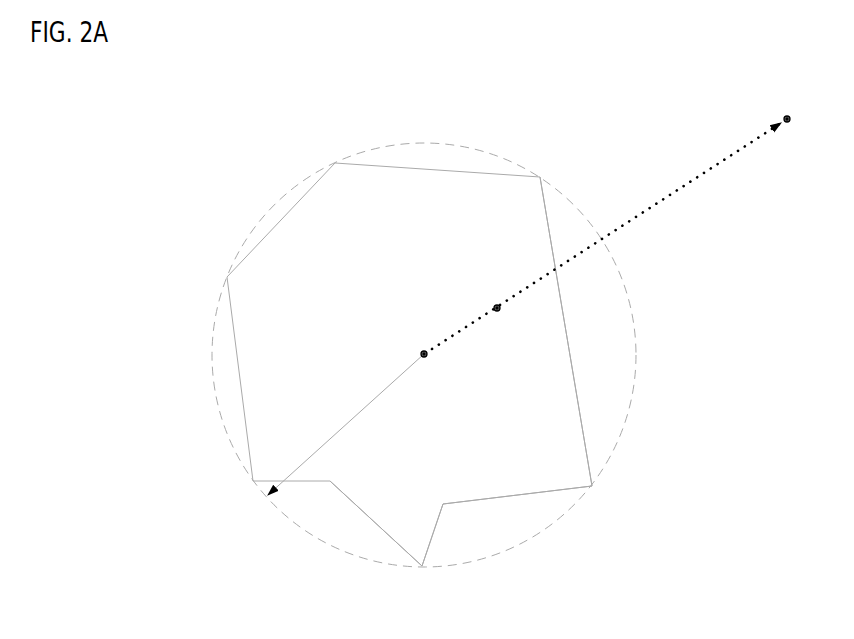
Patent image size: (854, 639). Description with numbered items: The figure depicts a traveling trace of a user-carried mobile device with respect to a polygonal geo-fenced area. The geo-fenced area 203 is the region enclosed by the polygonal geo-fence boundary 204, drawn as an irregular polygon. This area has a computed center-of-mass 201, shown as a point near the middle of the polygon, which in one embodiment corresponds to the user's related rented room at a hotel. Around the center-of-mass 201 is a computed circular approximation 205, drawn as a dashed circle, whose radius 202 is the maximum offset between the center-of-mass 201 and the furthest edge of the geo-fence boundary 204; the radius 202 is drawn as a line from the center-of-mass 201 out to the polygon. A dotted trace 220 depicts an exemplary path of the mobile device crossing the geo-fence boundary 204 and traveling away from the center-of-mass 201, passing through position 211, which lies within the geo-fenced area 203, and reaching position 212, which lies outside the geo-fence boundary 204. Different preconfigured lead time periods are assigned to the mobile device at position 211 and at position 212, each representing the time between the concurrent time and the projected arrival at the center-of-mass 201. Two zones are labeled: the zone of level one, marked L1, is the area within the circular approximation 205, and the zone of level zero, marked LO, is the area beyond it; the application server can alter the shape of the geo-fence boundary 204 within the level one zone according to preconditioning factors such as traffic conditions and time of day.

The center-of-mass 201 is at (403, 337).
The radius 202 is at (346, 424).
The geo-fenced area 203 is at (517, 340).
The polygonal geo-fence boundary 204 is at (397, 168).
The circular approximation 205 is at (635, 389).
The position 211 is at (476, 290).
The position 212 is at (793, 102).
The dotted trace 220 is at (606, 236).
The zone of Level 1 L1 is at (422, 527).
The zone of Level 0 LO is at (385, 550).